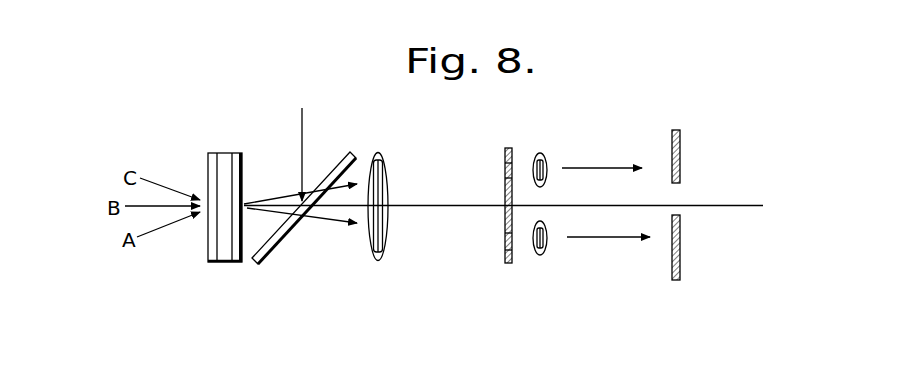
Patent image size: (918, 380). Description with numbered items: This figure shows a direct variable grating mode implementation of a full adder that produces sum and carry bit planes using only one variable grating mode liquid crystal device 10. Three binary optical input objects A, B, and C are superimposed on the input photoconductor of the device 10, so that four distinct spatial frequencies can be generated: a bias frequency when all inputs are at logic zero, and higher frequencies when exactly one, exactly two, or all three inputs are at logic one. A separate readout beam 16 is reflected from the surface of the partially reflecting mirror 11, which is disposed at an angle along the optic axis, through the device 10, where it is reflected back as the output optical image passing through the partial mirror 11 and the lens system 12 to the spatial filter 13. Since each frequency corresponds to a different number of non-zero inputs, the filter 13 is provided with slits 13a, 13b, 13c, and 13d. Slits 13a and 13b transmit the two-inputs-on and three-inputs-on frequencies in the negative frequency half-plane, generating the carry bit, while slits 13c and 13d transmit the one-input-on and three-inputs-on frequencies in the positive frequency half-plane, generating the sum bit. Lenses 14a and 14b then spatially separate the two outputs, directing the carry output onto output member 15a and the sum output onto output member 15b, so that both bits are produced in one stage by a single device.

The variable grating mode liquid crystal device 10 is at (242, 153).
The partially reflecting mirror 11 is at (353, 153).
The lens system 12 is at (386, 158).
The spatial filter 13 is at (512, 148).
The slit 13a is at (505, 161).
The slit 13b is at (505, 178).
The slit 13c is at (505, 233).
The slit 13d is at (505, 250).
The lens 14a is at (547, 159).
The lens 14b is at (547, 245).
The output member 15a is at (680, 130).
The output member 15b is at (680, 280).
The readout beam 16 is at (304, 118).